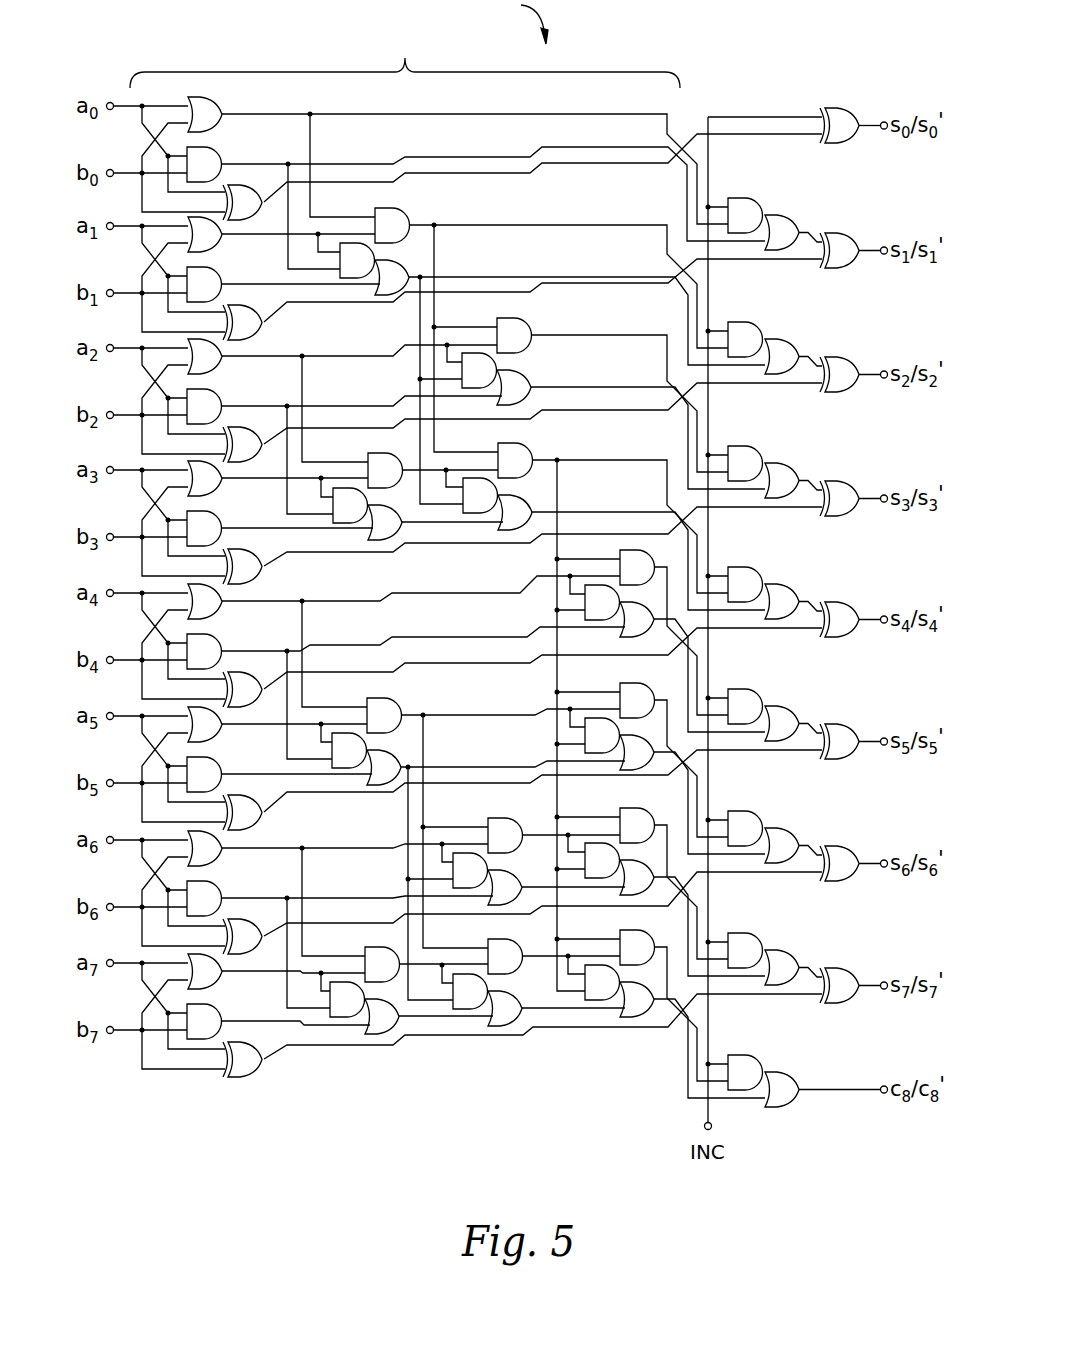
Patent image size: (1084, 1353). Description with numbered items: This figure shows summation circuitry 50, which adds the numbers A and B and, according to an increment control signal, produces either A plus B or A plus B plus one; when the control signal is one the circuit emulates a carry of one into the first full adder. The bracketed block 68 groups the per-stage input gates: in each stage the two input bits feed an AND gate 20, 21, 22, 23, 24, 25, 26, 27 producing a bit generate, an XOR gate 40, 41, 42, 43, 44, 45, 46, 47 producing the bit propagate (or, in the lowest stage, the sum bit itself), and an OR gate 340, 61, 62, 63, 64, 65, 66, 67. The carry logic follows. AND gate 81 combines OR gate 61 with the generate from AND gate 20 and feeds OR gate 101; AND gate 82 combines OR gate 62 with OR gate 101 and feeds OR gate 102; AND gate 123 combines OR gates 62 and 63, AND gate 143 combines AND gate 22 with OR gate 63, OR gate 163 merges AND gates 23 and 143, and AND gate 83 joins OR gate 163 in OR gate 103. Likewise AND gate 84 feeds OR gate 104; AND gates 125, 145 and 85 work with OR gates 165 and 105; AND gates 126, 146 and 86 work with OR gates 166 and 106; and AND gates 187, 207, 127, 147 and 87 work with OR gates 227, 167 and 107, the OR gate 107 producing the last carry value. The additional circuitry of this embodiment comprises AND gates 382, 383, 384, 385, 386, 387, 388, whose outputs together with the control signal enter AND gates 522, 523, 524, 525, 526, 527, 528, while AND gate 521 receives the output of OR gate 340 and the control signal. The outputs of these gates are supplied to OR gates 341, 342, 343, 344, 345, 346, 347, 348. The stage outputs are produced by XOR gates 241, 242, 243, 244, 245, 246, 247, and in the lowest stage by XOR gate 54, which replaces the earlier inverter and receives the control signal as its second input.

The summation circuitry 50 is at (519, 22).
The input stage 68 is at (405, 61).
The OR gate 340 is at (205, 97).
The AND gate 20 is at (212, 147).
The XOR gate 40 is at (247, 185).
The OR gate 61 is at (224, 241).
The AND gate 21 is at (212, 267).
The XOR gate 41 is at (256, 340).
The OR gate 62 is at (224, 363).
The AND gate 22 is at (212, 389).
The XOR gate 42 is at (243, 423).
The OR gate 63 is at (224, 485).
The AND gate 23 is at (212, 511).
The XOR gate 43 is at (243, 545).
The OR gate 64 is at (224, 608).
The AND gate 24 is at (212, 634).
The XOR gate 44 is at (243, 668).
The OR gate 65 is at (224, 731).
The AND gate 25 is at (212, 757).
The XOR gate 45 is at (243, 791).
The OR gate 66 is at (224, 855).
The AND gate 26 is at (212, 881).
The XOR gate 46 is at (243, 915).
The OR gate 67 is at (224, 978).
The AND gate 27 is at (212, 1004).
The XOR gate 47 is at (243, 1038).
The AND gate 382 is at (393, 208).
The AND gate 81 is at (353, 278).
The OR gate 101 is at (393, 256).
The AND gate 383 is at (515, 318).
The AND gate 82 is at (475, 388).
The OR gate 102 is at (515, 366).
The AND gate 123 is at (374, 440).
The AND gate 143 is at (346, 523).
The OR gate 163 is at (382, 540).
The AND gate 384 is at (516, 443).
The AND gate 83 is at (476, 513).
The OR gate 103 is at (516, 491).
The AND gate 385 is at (640, 550).
The AND gate 84 is at (616, 592).
The OR gate 104 is at (622, 637).
The AND gate 125 is at (374, 686).
The AND gate 145 is at (345, 768).
The OR gate 165 is at (381, 785).
The AND gate 386 is at (638, 683).
The AND gate 85 is at (616, 725).
The OR gate 105 is at (622, 772).
The AND gate 126 is at (498, 806).
The AND gate 146 is at (466, 888).
The OR gate 166 is at (504, 871).
The AND gate 387 is at (638, 808).
The AND gate 86 is at (616, 850).
The OR gate 106 is at (622, 895).
The AND gate 187 is at (367, 950).
The AND gate 207 is at (343, 1017).
The OR gate 227 is at (383, 1034).
The AND gate 127 is at (498, 927).
The AND gate 147 is at (466, 1009).
The OR gate 167 is at (511, 985).
The AND gate 388 is at (638, 930).
The AND gate 87 is at (597, 1000).
The OR gate 107 is at (637, 1017).
The XOR gate 54 is at (840, 108).
The AND gate 521 is at (738, 198).
The OR gate 341 is at (775, 215).
The XOR gate 241 is at (835, 233).
The AND gate 522 is at (738, 322).
The OR gate 342 is at (775, 339).
The XOR gate 242 is at (835, 357).
The AND gate 523 is at (738, 446).
The OR gate 343 is at (775, 463).
The XOR gate 243 is at (835, 481).
The AND gate 524 is at (738, 567).
The OR gate 344 is at (775, 584).
The XOR gate 244 is at (835, 602).
The AND gate 525 is at (738, 689).
The OR gate 345 is at (775, 706).
The XOR gate 245 is at (835, 724).
The AND gate 526 is at (738, 811).
The OR gate 346 is at (775, 828).
The XOR gate 246 is at (835, 846).
The AND gate 527 is at (738, 933).
The OR gate 347 is at (775, 950).
The XOR gate 247 is at (835, 968).
The AND gate 528 is at (738, 1055).
The OR gate 348 is at (775, 1072).